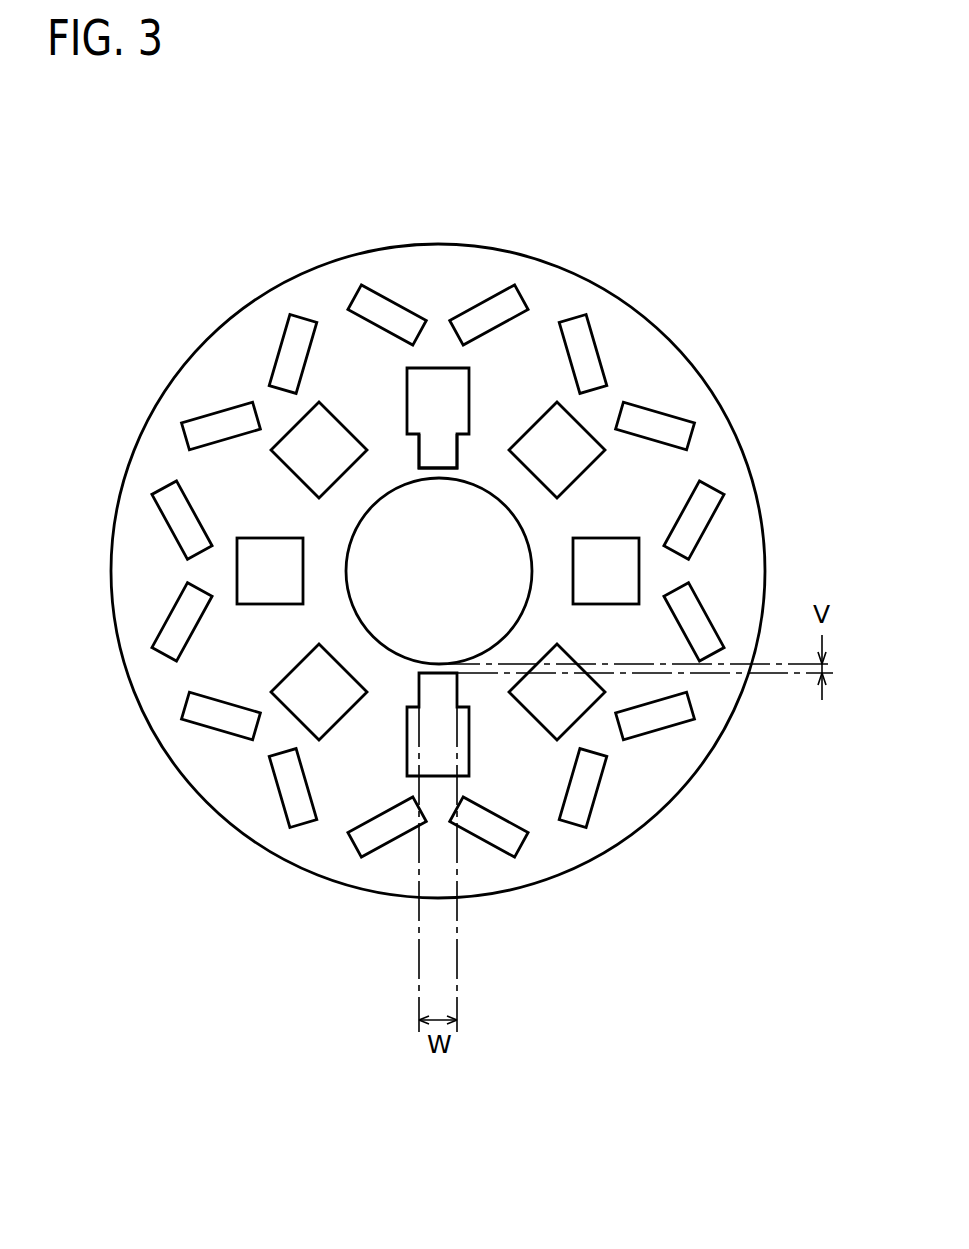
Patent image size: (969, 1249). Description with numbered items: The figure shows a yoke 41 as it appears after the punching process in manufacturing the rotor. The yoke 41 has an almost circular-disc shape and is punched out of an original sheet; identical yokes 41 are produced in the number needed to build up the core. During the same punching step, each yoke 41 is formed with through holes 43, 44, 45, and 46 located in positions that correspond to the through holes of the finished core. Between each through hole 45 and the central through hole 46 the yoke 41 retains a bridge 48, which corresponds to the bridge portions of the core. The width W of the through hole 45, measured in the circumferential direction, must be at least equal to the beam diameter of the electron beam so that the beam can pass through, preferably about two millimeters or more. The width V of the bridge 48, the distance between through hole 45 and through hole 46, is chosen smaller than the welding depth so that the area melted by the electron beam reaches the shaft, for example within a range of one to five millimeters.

The yoke 41 is at (613, 203).
The through hole 43 is at (646, 403).
The through hole 44 is at (576, 472).
The through hole 45 is at (464, 396).
The through hole 46 is at (355, 535).
The bridge 48 is at (445, 468).